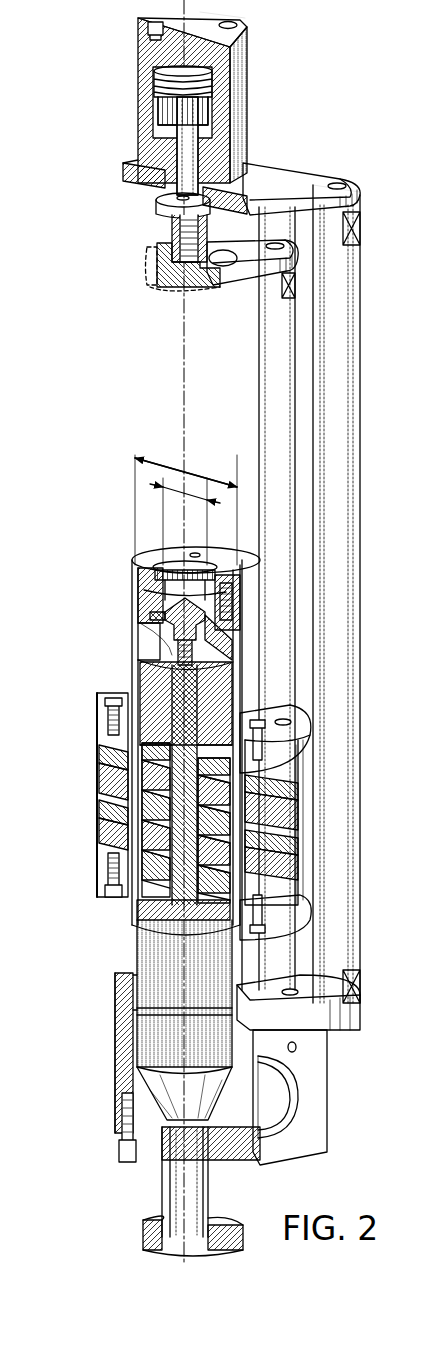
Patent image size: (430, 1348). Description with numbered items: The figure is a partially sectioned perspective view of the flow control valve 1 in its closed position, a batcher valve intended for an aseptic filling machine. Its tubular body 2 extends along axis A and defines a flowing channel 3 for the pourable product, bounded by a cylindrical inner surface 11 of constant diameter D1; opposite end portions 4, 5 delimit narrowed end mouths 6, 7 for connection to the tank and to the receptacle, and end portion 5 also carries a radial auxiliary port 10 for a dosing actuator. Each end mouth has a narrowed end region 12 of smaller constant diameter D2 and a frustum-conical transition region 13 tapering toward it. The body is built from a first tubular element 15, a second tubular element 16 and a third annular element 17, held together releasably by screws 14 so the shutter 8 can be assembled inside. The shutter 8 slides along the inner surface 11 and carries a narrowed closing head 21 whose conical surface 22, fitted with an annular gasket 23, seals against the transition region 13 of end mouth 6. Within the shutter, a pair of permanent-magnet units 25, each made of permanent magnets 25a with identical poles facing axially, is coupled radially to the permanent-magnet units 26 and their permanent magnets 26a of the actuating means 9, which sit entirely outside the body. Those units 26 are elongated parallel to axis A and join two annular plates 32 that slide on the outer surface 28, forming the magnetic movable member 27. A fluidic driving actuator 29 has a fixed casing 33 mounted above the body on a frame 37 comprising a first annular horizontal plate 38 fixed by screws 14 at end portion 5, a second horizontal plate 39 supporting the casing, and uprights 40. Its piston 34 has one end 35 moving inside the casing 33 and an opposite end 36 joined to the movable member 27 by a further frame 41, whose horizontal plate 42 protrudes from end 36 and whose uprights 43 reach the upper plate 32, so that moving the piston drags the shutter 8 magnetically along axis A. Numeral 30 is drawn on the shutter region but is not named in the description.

The flow control valve 1 is at (320, 88).
The tubular body 2 is at (243, 572).
The flowing channel 3 is at (144, 650).
The end portion 4 is at (140, 595).
The end portion 5 is at (168, 1185).
The end mouth 6 is at (188, 598).
The end mouth 7 is at (170, 1240).
The shutter 8 is at (157, 730).
The actuating means 9 is at (268, 132).
The auxiliary port 10 is at (275, 1148).
The cylindrical inner surface 11 is at (150, 660).
The narrowed end region 12 is at (172, 585).
The frustum-conical transition region 13 is at (152, 622).
The screws 14 is at (122, 1163).
The first tubular element 15 is at (225, 1218).
The second tubular element 16 is at (316, 1142).
The third annular element 17 is at (152, 662).
The closing head 21 is at (162, 612).
The conical surface 22 is at (245, 592).
The annular gasket 23 is at (142, 612).
The permanent-magnet units 25 is at (115, 792).
The permanent magnets 25a is at (130, 765).
The permanent-magnet units 26 is at (94, 820).
The permanent magnets 26a is at (103, 772).
The magnetic movable member 27 is at (95, 898).
The outer surface 28 is at (260, 690).
The driving actuator 29 is at (118, 60).
The displacement body 30 is at (160, 685).
The annular plates 32 is at (100, 710).
The fixed casing 33 is at (248, 17).
The piston 34 is at (180, 165).
The end 35 is at (163, 67).
The end 36 is at (165, 248).
The frame 37 is at (363, 402).
The first annular horizontal plate 38 is at (318, 1018).
The second horizontal plate 39 is at (300, 178).
The uprights 40 is at (356, 275).
The further frame 41 is at (228, 228).
The horizontal plate 42 is at (240, 272).
The uprights 43 is at (272, 424).
The axis A is at (140, 1165).
The diameter D1 is at (210, 480).
The diameter D2 is at (175, 488).